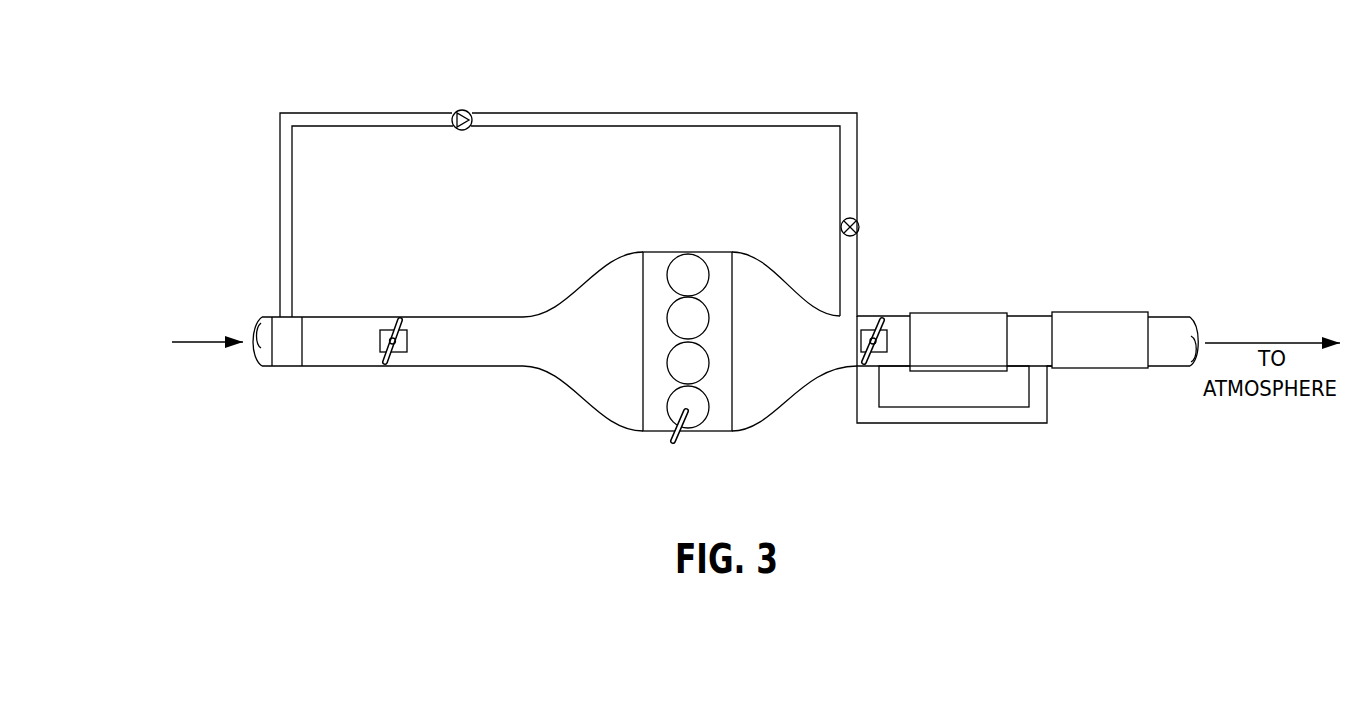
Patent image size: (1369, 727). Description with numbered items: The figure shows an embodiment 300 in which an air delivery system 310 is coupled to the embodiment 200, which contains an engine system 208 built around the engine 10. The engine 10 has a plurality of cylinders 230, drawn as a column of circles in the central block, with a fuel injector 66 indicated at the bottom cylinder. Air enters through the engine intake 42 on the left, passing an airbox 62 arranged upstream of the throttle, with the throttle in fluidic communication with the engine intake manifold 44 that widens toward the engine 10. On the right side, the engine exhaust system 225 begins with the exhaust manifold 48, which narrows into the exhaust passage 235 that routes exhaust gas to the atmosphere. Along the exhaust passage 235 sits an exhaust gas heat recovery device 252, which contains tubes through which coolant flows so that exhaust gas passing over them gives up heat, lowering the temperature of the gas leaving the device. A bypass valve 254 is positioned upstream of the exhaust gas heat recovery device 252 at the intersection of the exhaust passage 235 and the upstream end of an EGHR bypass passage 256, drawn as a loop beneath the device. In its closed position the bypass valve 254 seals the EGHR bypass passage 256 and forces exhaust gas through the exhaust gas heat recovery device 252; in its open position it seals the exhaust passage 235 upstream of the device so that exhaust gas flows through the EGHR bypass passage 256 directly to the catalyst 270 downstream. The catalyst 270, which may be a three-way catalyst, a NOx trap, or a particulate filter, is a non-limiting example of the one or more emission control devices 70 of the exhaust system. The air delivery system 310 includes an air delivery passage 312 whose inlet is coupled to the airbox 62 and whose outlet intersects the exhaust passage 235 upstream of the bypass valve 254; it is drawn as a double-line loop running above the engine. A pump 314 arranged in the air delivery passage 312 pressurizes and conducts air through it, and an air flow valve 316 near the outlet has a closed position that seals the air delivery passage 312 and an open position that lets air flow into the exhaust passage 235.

The engine 10 is at (732, 295).
The engine intake 42 is at (318, 368).
The engine intake manifold 44 is at (610, 366).
The exhaust manifold 48 is at (758, 374).
The airbox 62 is at (273, 368).
The fuel injector 66 is at (680, 440).
The emission control devices 70 is at (1014, 236).
The embodiment 200 is at (219, 232).
The engine system 208 is at (753, 222).
The engine exhaust system 225 is at (769, 262).
The cylinders 230 is at (688, 253).
The exhaust passage 235 is at (1162, 317).
The exhaust gas heat recovery (EGHR) device 252 is at (954, 342).
The bypass valve 254 is at (882, 320).
The EGHR bypass passage 256 is at (950, 423).
The catalyst 270 is at (1100, 340).
The embodiment 300 is at (137, 119).
The air delivery system 310 is at (846, 62).
The air delivery passage 312 is at (545, 112).
The pump 314 is at (465, 110).
The air flow valve 316 is at (856, 218).